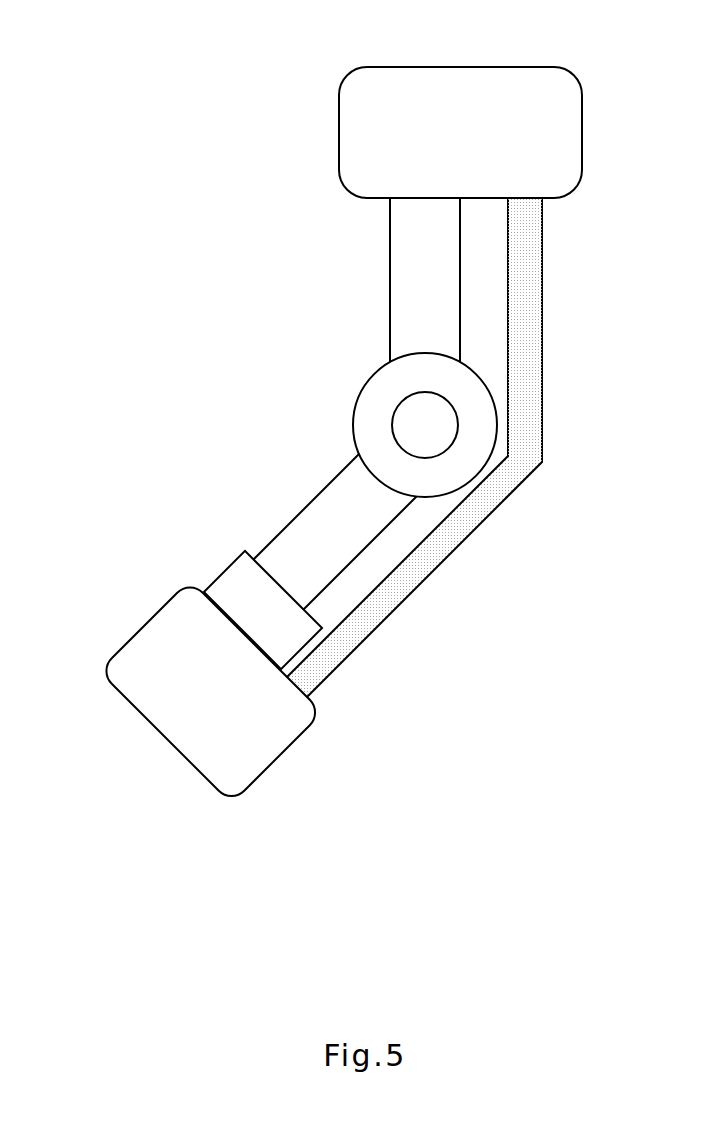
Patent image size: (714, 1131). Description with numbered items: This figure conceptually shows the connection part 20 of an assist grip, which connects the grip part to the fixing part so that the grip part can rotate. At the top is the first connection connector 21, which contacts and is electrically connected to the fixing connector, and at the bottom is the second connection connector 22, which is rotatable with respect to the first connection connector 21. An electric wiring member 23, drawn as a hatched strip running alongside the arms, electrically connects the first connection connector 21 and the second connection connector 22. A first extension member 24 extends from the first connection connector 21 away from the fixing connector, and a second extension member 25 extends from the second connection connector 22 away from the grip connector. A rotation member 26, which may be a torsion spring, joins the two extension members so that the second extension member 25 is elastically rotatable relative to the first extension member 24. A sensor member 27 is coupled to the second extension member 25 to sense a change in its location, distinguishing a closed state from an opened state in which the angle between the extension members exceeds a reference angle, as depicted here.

The connection part 20 is at (97, 40).
The first connection connector 21 is at (548, 138).
The second connection connector 22 is at (173, 680).
The electric wiring member 23 is at (465, 519).
The first extension member 24 is at (428, 291).
The second extension member 25 is at (330, 520).
The rotation member 26 is at (437, 425).
The sensor member 27 is at (230, 575).